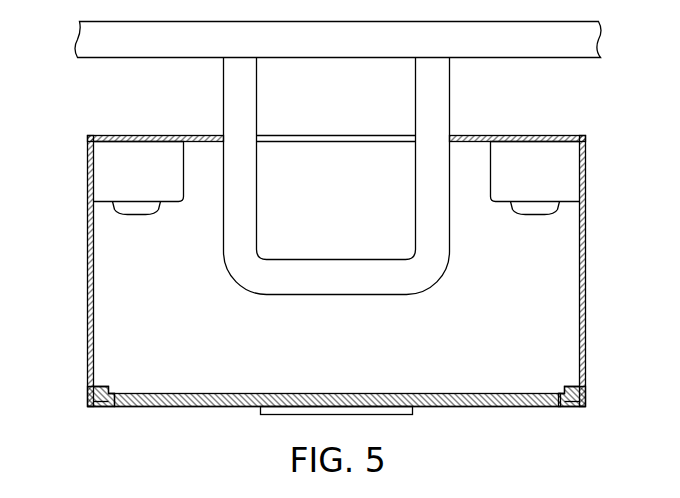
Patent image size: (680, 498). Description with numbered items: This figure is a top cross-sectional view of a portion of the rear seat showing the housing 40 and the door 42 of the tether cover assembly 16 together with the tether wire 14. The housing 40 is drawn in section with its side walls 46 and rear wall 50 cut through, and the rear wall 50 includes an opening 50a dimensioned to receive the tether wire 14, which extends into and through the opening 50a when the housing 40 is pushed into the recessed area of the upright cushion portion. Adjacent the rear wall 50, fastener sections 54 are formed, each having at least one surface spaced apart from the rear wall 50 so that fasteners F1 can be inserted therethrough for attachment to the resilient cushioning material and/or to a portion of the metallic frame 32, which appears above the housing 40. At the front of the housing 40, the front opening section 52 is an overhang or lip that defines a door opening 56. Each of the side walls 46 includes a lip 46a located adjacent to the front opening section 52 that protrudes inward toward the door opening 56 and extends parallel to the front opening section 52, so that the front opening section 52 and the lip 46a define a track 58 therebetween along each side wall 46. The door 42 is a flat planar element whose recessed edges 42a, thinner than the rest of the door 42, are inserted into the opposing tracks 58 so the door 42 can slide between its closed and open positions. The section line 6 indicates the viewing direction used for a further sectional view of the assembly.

The section line 6- 6 is at (205, 123).
The tether wire 14 is at (430, 107).
The tether cover assembly 16 is at (339, 275).
The metallic frame 32 is at (500, 40).
The housing 40 is at (337, 275).
The door 42 is at (197, 392).
The recessed edges 42a is at (90, 406).
The side walls 46 is at (85, 340).
The lip 46a is at (98, 388).
The rear wall 50 is at (550, 134).
The opening 50a is at (350, 134).
The front opening section 52 is at (98, 408).
The fastener sections 54 is at (163, 205).
The door opening 56 is at (545, 405).
The track 58 is at (122, 402).
The fasteners F1 is at (127, 213).